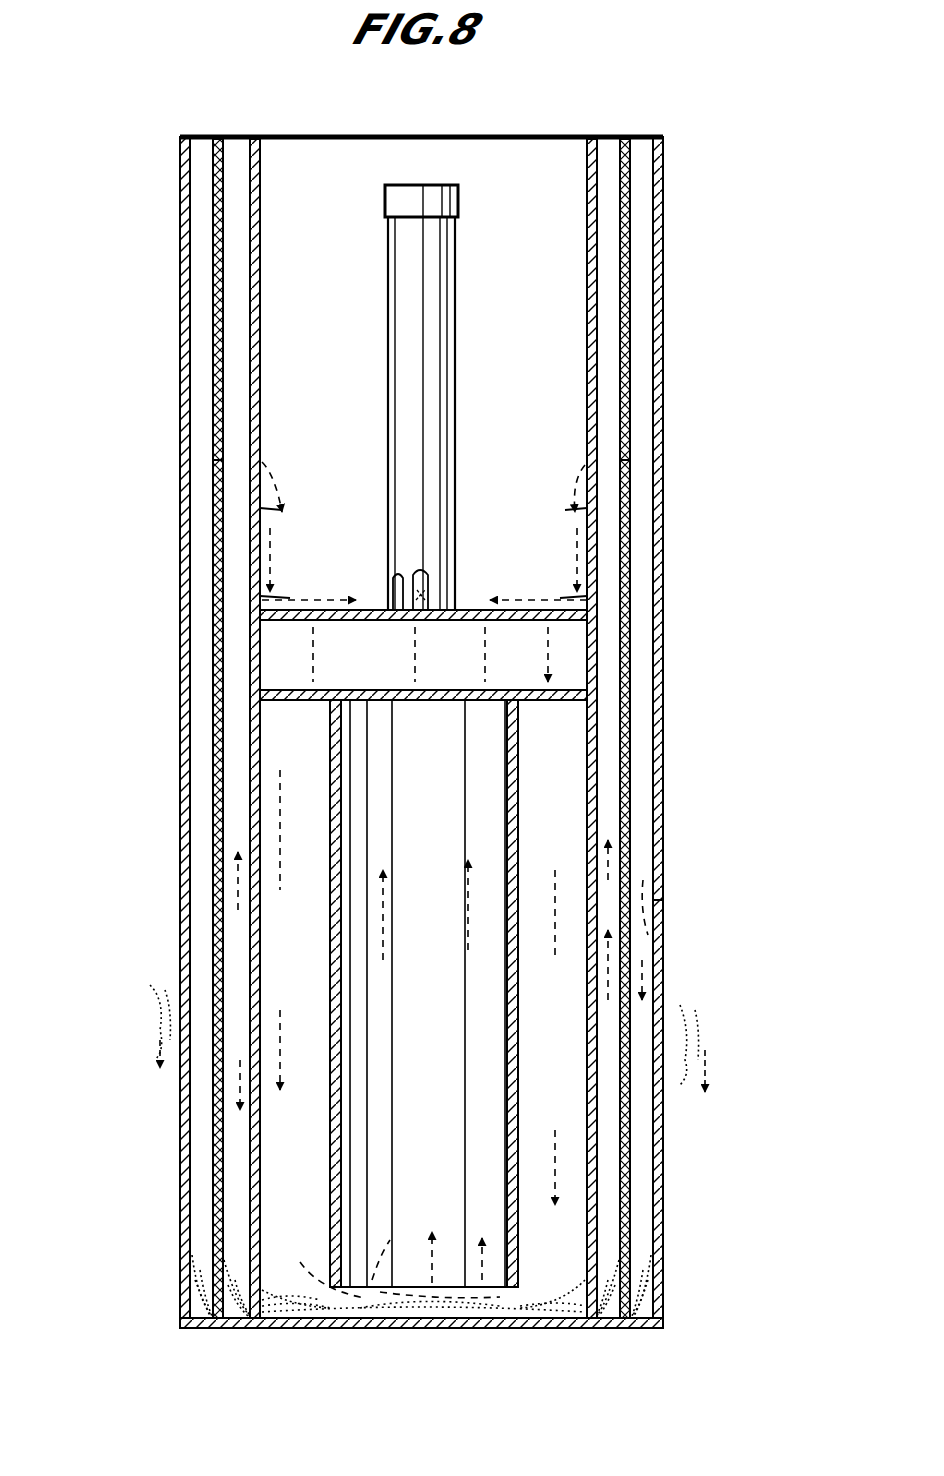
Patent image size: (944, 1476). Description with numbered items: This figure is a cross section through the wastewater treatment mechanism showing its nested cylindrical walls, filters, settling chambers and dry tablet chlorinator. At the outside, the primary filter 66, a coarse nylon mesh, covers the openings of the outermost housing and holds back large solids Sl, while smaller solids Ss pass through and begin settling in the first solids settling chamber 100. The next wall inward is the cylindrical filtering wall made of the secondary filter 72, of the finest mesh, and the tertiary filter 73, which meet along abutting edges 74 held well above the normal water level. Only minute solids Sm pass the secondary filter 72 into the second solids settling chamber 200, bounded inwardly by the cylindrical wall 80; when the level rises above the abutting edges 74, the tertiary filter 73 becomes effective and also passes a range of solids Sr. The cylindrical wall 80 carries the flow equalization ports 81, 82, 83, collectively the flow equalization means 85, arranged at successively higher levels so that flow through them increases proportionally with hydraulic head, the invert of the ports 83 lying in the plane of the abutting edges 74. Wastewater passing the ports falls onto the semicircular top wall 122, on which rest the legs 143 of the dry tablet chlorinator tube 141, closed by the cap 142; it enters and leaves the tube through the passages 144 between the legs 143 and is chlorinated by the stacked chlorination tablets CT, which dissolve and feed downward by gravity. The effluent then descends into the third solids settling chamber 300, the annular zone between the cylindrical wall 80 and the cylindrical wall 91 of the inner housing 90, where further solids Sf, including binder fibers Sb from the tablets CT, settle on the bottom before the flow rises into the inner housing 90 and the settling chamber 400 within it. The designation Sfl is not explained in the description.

The primary filter 66 is at (660, 935).
The secondary filter 72 is at (218, 727).
The tertiary filter 73 is at (223, 240).
The abutting edges 74 is at (213, 467).
The cylindrical wall 80 is at (531, 304).
The flow equalization ports 81 is at (262, 598).
The flow equalization ports 82 is at (262, 508).
The flow equalization ports 83 is at (260, 455).
The flow equalization means 85 is at (300, 500).
The inner housing 90 is at (425, 725).
The cylindrical wall 91 is at (443, 1192).
The first solids settling chamber 100 is at (640, 553).
The semicircular top wall 122 is at (360, 619).
The dry tablet chlorinator tube 141 is at (455, 262).
The cap 142 is at (458, 192).
The legs 143 is at (398, 592).
The passages 144 is at (420, 590).
The second solids settling chamber 200 is at (606, 768).
The third solids settling chamber 300 is at (310, 887).
The fourth solids settling chamber 400 is at (453, 1042).
The chlorination tablets CT is at (430, 592).
The large solids Sl is at (150, 1025).
The smaller solids Ss is at (200, 1078).
The settled solids Sf is at (445, 1318).
The binder fibers Sb is at (450, 1318).
The fluidized solids Sfl is at (290, 1318).
The minute solids Sm is at (237, 1318).
The range of solids Sr is at (243, 1318).